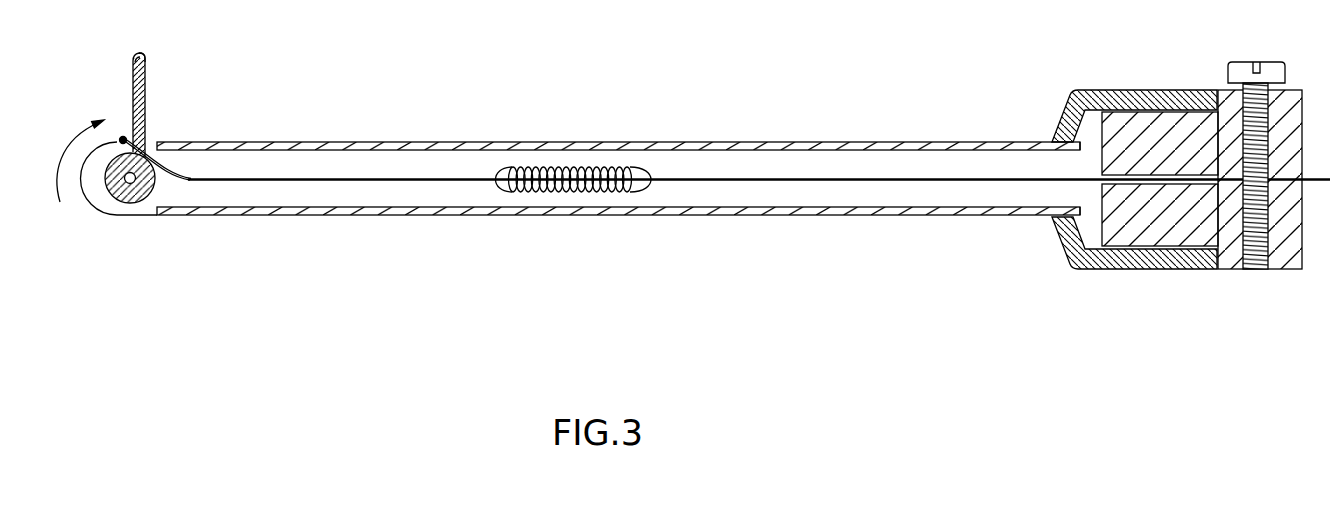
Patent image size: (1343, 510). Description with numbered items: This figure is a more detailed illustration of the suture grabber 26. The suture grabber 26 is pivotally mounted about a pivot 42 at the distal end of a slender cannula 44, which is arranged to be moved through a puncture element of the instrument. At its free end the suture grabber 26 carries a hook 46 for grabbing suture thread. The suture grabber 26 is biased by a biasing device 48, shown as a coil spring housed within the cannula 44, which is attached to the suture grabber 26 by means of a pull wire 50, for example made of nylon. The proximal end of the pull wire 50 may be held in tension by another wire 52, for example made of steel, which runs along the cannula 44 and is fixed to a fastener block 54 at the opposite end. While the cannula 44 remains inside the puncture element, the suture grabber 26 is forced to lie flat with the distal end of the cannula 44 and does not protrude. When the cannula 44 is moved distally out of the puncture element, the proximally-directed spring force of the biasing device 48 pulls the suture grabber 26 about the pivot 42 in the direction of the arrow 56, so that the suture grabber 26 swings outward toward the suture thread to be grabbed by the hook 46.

The suture grabber 26 is at (143, 112).
The pivot 42 is at (120, 203).
The cannula 44 is at (740, 142).
The hook 46 is at (133, 57).
The biasing device 48 is at (560, 165).
The pull wire 50 is at (230, 187).
The wire 52 is at (842, 182).
The fastener block 54 is at (1162, 125).
The arrow 56 is at (63, 143).